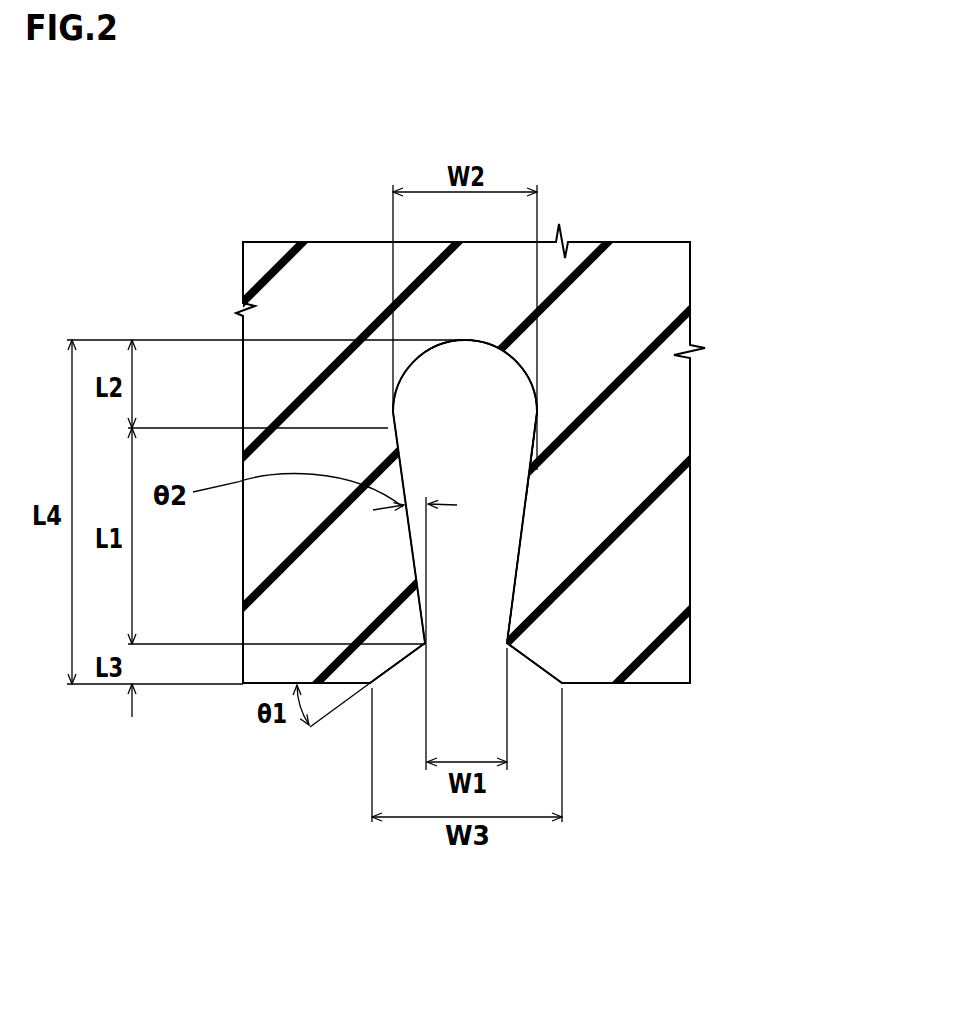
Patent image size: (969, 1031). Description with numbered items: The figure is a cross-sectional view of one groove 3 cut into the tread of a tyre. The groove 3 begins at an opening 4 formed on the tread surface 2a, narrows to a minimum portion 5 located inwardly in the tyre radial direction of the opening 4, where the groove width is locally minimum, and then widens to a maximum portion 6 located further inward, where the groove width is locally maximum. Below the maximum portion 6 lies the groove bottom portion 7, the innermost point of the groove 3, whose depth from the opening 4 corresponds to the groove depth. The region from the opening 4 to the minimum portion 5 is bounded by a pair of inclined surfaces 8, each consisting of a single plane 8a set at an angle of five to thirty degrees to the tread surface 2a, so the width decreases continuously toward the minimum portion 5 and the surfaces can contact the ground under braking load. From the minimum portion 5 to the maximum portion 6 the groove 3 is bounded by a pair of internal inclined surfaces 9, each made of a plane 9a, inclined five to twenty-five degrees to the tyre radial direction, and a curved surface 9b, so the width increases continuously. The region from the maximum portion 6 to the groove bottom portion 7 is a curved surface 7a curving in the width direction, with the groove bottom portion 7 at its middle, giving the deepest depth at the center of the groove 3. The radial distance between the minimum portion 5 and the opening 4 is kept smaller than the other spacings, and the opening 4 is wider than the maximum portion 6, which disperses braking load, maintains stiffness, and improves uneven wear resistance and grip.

The tread surface 2a is at (661, 692).
The groove 3 is at (578, 744).
The opening 4 is at (561, 685).
The minimum portion 5 is at (507, 645).
The maximum portion 6 is at (534, 428).
The groove bottom portion 7 is at (467, 343).
The curved surface 7a is at (512, 363).
The inclined surface 8 is at (351, 725).
The plane 8a is at (396, 667).
The internal inclined surface 9 is at (640, 532).
The plane 9a is at (516, 558).
The curved surface 9b is at (534, 440).